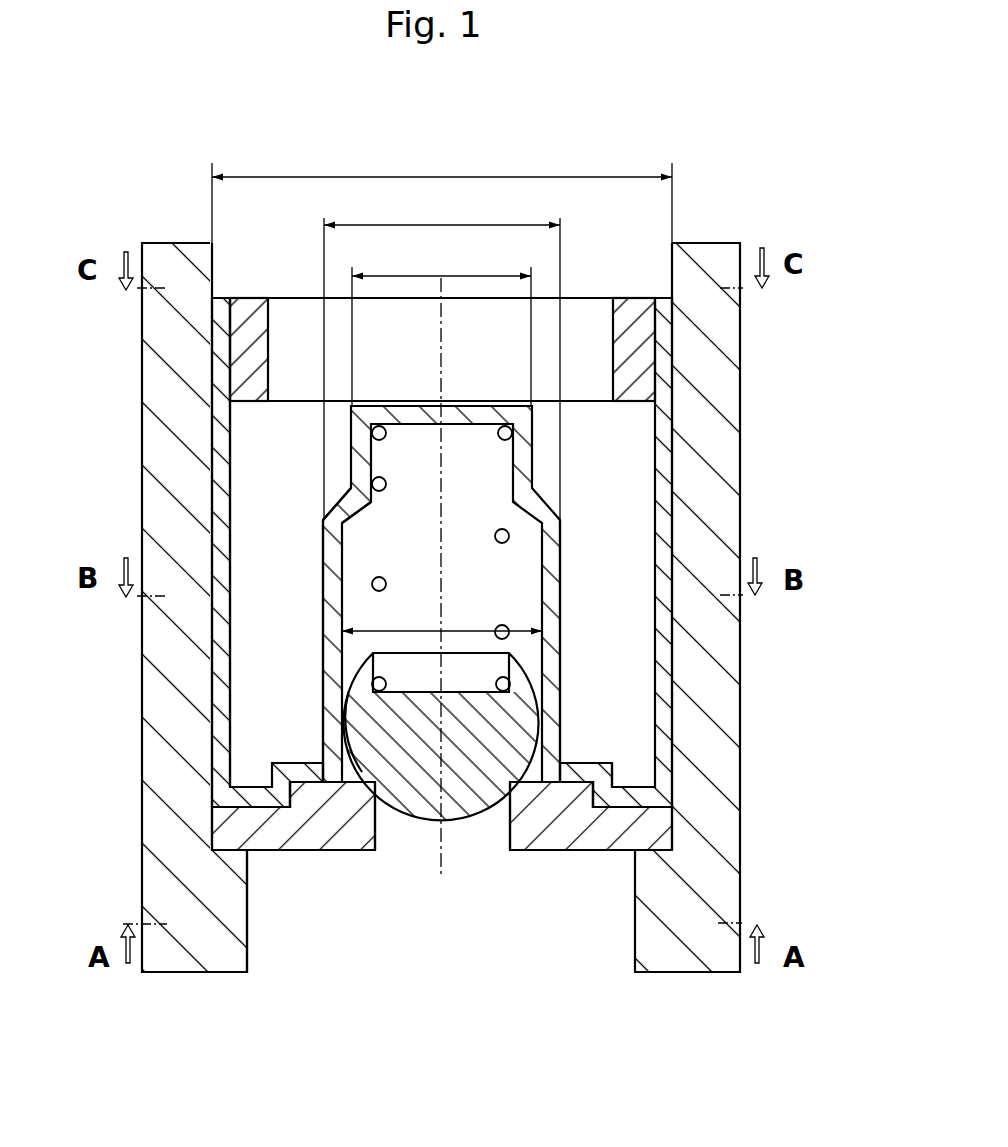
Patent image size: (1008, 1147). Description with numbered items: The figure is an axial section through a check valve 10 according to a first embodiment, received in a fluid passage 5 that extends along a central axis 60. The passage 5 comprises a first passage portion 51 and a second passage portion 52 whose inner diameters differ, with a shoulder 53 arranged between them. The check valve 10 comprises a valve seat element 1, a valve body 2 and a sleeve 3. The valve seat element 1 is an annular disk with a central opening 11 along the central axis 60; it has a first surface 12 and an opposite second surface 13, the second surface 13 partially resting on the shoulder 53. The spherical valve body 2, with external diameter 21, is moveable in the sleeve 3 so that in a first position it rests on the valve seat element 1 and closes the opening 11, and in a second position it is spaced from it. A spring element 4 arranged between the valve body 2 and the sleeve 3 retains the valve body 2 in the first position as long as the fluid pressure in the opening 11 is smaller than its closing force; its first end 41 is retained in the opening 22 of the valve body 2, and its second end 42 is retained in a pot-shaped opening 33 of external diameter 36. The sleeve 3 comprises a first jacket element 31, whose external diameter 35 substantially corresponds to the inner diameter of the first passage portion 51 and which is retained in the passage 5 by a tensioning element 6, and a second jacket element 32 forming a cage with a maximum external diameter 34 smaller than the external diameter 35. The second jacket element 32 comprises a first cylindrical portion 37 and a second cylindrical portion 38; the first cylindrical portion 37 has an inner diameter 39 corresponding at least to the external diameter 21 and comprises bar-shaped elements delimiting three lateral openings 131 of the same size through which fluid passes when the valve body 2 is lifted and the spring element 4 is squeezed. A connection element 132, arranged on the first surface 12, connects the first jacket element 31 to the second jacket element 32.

The check valve 10 is at (107, 187).
The valve seat element 1 is at (560, 825).
The opening 11 is at (479, 850).
The first surface 12 is at (628, 808).
The second surface 13 is at (592, 851).
The opening 131 is at (552, 574).
The connection element 132 is at (632, 797).
The valve body 2 is at (427, 765).
The external diameter 21 is at (530, 692).
The opening 22 is at (372, 687).
The sleeve 3 is at (220, 437).
The first jacket element 31 is at (220, 539).
The second jacket element 32 is at (335, 608).
The pot-shaped opening 33 is at (527, 411).
The maximum external diameter 34 is at (527, 225).
The external diameter 35 is at (275, 175).
The external diameter 36 is at (470, 276).
The first cylindrical portion 37 is at (332, 673).
The second cylindrical portion 38 is at (353, 470).
The inner diameter 39 is at (542, 631).
The spring element 4 is at (510, 535).
The first end 41 is at (512, 688).
The second end 42 is at (517, 428).
The fluid passage 5 is at (690, 298).
The first passage portion 51 is at (178, 396).
The second passage portion 52 is at (167, 959).
The shoulder 53 is at (212, 850).
The tensioning element 6 is at (240, 333).
The central axis 60 is at (441, 875).